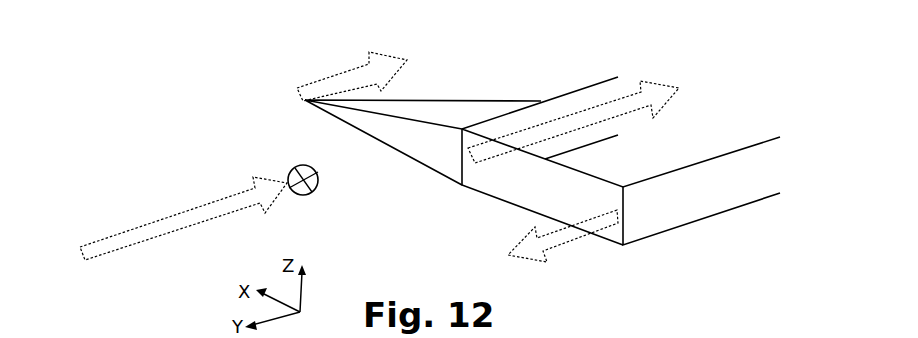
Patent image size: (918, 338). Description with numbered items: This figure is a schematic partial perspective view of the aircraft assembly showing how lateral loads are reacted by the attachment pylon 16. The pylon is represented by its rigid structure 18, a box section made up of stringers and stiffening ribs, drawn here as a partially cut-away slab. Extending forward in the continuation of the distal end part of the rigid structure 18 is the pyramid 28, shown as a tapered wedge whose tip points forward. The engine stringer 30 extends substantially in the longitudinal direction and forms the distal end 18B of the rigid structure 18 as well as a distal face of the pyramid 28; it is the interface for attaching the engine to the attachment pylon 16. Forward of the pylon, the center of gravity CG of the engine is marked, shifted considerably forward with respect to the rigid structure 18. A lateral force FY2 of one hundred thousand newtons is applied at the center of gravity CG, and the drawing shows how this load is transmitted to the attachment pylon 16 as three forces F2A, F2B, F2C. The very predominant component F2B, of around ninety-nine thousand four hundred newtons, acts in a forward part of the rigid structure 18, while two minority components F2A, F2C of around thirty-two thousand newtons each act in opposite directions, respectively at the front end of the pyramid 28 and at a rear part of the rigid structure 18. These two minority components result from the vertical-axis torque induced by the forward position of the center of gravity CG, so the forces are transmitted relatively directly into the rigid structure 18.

The pyramid 28 is at (435, 110).
The rigid structure 18 is at (628, 167).
The attachment pylon 16 is at (690, 195).
The engine stringer 30 is at (514, 187).
The distal end 18B is at (523, 182).
The minority force component F2A is at (345, 72).
The predominant force component F2B is at (597, 107).
The minority force component F2C is at (567, 243).
The lateral force FY2 is at (143, 224).
The center of gravity CG is at (314, 193).